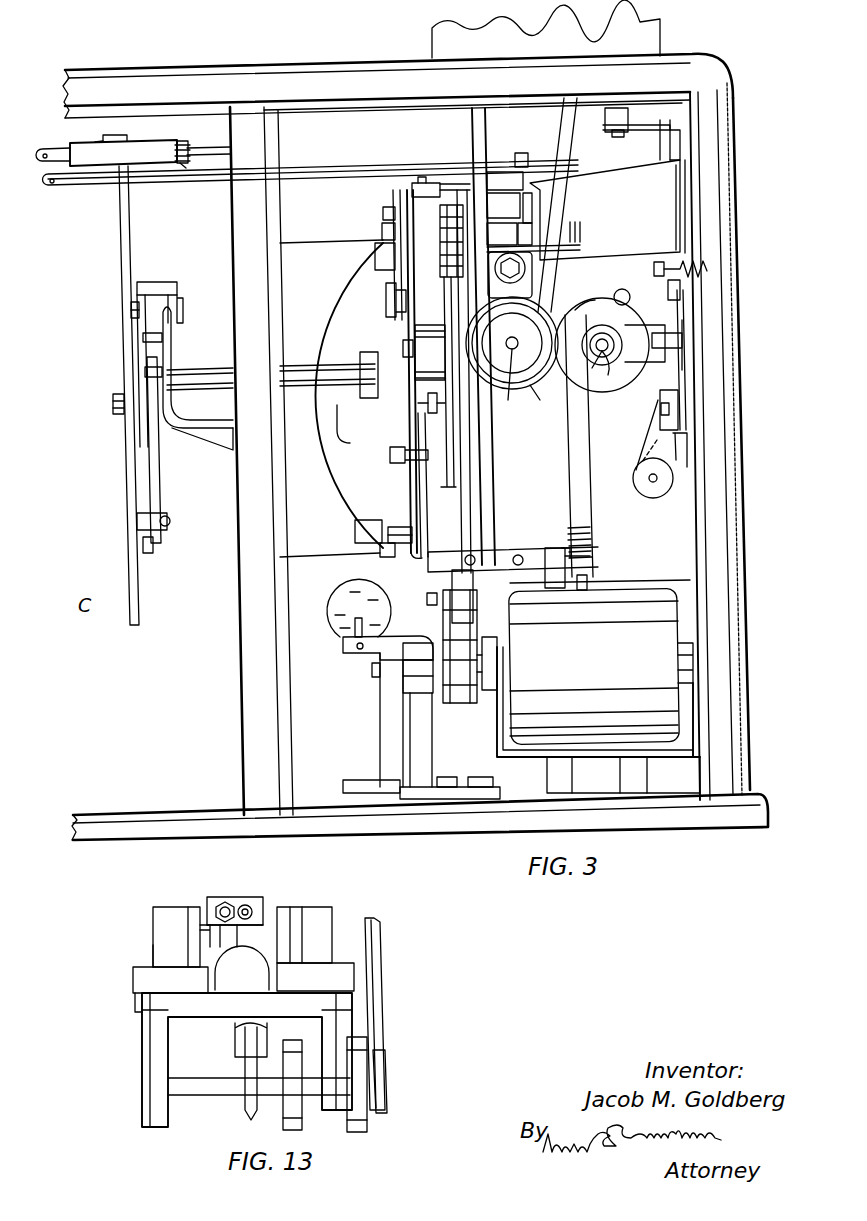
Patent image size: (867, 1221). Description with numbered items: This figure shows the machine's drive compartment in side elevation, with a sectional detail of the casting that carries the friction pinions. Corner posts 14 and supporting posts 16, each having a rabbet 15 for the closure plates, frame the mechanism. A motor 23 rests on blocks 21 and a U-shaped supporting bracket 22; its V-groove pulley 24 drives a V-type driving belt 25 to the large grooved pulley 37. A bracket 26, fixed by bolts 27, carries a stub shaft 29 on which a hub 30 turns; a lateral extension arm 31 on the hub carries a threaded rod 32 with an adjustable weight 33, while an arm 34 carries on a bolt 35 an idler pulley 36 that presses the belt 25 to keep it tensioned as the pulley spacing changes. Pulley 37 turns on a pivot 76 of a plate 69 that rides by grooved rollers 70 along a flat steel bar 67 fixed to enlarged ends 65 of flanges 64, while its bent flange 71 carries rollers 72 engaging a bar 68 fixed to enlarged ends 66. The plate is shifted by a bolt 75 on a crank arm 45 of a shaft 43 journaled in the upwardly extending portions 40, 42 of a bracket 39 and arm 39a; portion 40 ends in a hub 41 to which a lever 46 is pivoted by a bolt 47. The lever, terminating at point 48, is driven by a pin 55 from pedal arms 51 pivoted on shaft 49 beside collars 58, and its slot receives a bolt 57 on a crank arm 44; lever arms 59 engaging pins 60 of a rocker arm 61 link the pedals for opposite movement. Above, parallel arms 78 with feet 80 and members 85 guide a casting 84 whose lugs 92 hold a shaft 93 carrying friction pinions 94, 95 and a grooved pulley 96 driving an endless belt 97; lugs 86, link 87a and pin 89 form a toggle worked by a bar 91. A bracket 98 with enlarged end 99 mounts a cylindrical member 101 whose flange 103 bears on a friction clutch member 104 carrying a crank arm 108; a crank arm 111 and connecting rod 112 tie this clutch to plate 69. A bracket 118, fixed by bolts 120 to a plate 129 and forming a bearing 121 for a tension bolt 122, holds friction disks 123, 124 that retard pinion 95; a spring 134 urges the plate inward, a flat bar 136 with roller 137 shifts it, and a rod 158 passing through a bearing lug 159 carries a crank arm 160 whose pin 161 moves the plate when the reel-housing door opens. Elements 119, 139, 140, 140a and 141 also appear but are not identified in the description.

In FIG. 3, the corner post 14 is at (726, 302).
In FIG. 3, the rabbet 15 is at (277, 152).
In FIG. 3, the supporting post 16 is at (255, 461).
In FIG. 3, the blocks 21 is at (628, 772).
In FIG. 3, the U-shaped supporting bracket 22 is at (496, 728).
In FIG. 3, the motor 23 is at (601, 667).
In FIG. 3, the V-groove pulley 24 is at (480, 642).
In FIG. 3, the V-type driving belt 25 is at (462, 532).
In FIG. 3, the bracket 26 is at (386, 726).
In FIG. 3, the bolts 27 is at (370, 780).
In FIG. 3, the stub shaft 29 is at (372, 672).
In FIG. 3, the hub 30 is at (424, 695).
In FIG. 3, the lateral extension arm 31 is at (400, 635).
In FIG. 3, the threaded rod 32 is at (352, 627).
In FIG. 3, the weight 33 is at (370, 592).
In FIG. 3, the arm 34 is at (442, 625).
In FIG. 3, the bolt or shaft 35 is at (427, 600).
In FIG. 3, the idler pulley 36 is at (466, 595).
In FIG. 3, the large grooved pulley 37 is at (441, 236).
In FIG. 3, the bracket 39 is at (206, 422).
In FIG. 3, the arm 39a is at (339, 412).
In FIG. 3, the upwardly extending portion 40 is at (173, 350).
In FIG. 3, the hub 41 is at (163, 283).
In FIG. 3, the upwardly extending portion 42 is at (366, 352).
In FIG. 3, the shaft 43 is at (206, 375).
In FIG. 3, the crank arm 44 is at (155, 488).
In FIG. 3, the crank arm 45 is at (406, 422).
In FIG. 3, the lever 46 is at (143, 345).
In FIG. 3, the bolt 47 is at (130, 311).
In FIG. 3, the point 48 is at (150, 547).
In FIG. 3, the shaft 49 is at (60, 152).
In FIG. 3, the pedal arms 51 is at (127, 137).
In FIG. 3, the bolt or pin 55 is at (112, 406).
In FIG. 3, the bolt 57 is at (171, 521).
In FIG. 3, the collars 58 is at (100, 141).
In FIG. 3, the lever arm 59 is at (184, 165).
In FIG. 3, the pins 60 is at (188, 148).
In FIG. 3, the rocker arm 61 is at (150, 153).
In FIG. 3, the flanges 64 is at (349, 395).
In FIG. 3, the enlarged ends 65 is at (384, 256).
In FIG. 3, the enlarged ends 66 is at (355, 528).
In FIG. 3, the flat steel bar 67 is at (382, 239).
In FIG. 3, the steel bar 68 is at (380, 548).
In FIG. 3, the plate 69 is at (412, 268).
In FIG. 3, the grooved rollers 70 is at (384, 210).
In FIG. 3, the flange 71 is at (422, 547).
In FIG. 3, the rollers 72 is at (406, 527).
In FIG. 3, the bolt 75 is at (392, 462).
In FIG. 3, the pivot 76 is at (404, 352).
In FIG. 3, the parallel arms 78 is at (605, 210).
In FIG. 13, the parallel arms 78 is at (194, 915).
In FIG. 3, the outwardly turned feet 80 is at (683, 203).
In FIG. 13, the outwardly turned feet 80 is at (155, 947).
In FIG. 3, the casting 84 is at (533, 237).
In FIG. 3, the outwardly extending members 85 is at (526, 266).
In FIG. 13, the outwardly extending members 85 is at (243, 978).
In FIG. 13, the lugs 86 is at (234, 1036).
In FIG. 13, the link 87a is at (247, 1058).
In FIG. 13, the pin 89 is at (243, 1036).
In FIG. 3, the bar 91 is at (567, 455).
In FIG. 3, the lugs 92 is at (510, 276).
In FIG. 13, the lugs 92 is at (152, 1061).
In FIG. 3, the shaft 93 is at (519, 383).
In FIG. 3, the friction pinion 94 is at (542, 401).
In FIG. 13, the friction pinion 95 is at (283, 1115).
In FIG. 3, the grooved pulley 96 is at (512, 343).
In FIG. 3, the endless V-type belt 97 is at (566, 128).
In FIG. 13, the endless V-type belt 97 is at (378, 958).
In FIG. 3, the bracket 98 is at (436, 744).
In FIG. 13, the enlarged end 99 is at (362, 1130).
In FIG. 3, the cylindrical member 101 is at (548, 541).
In FIG. 3, the outwardly extending flange 103 is at (552, 545).
In FIG. 3, the friction clutch member 104 is at (575, 556).
In FIG. 3, the crank arm 108 is at (598, 584).
In FIG. 3, the crank arm 111 is at (428, 515).
In FIG. 3, the connecting rod 112 is at (445, 400).
In FIG. 3, the bracket 118 is at (641, 343).
In FIG. 3, the bar 119 is at (676, 370).
In FIG. 3, the bolts 120 is at (684, 338).
In FIG. 3, the bearing 121 is at (592, 368).
In FIG. 3, the tension bolt 122 is at (612, 368).
In FIG. 3, the friction disk 123 is at (602, 345).
In FIG. 3, the friction disk 124 is at (595, 295).
In FIG. 3, the plate 129 is at (674, 150).
In FIG. 3, the spring 134 is at (704, 268).
In FIG. 3, the flat bar 136 is at (507, 172).
In FIG. 3, the roller 137 is at (438, 184).
In FIG. 3, the block 139 is at (509, 208).
In FIG. 13, the block 139 is at (218, 935).
In FIG. 13, the nut 140 is at (216, 906).
In FIG. 13, the screw 140a is at (247, 905).
In FIG. 13, the plate 141 is at (258, 910).
In FIG. 3, the rod 158 is at (614, 136).
In FIG. 3, the bearing lug 159 is at (622, 110).
In FIG. 3, the crank arm 160 is at (640, 128).
In FIG. 3, the pin 161 is at (659, 141).